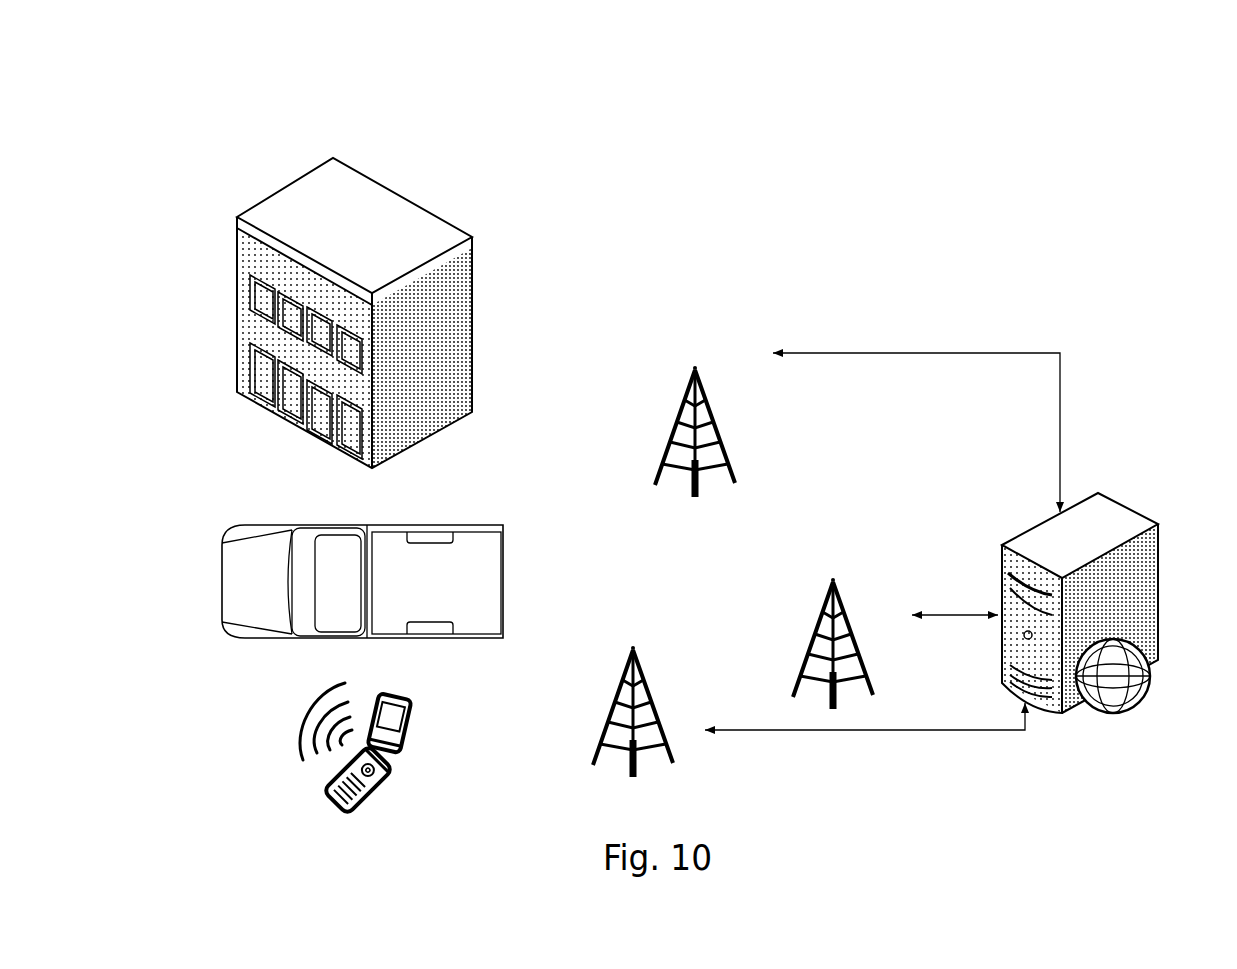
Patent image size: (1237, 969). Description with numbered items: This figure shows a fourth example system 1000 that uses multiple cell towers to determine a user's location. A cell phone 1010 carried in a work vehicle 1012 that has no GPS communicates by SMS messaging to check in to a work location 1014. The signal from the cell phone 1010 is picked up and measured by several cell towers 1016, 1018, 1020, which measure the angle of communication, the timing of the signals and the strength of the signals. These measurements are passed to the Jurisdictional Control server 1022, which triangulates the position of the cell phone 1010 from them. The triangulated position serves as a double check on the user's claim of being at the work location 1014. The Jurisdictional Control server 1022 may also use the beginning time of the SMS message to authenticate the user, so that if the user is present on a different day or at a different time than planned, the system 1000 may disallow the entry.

The communication system 1000 is at (593, 127).
The cell phone 1010 is at (295, 748).
The work vehicle 1012 is at (222, 582).
The work location 1014 is at (355, 160).
The cell tower 1016 is at (833, 515).
The cell tower 1018 is at (690, 300).
The cell tower 1020 is at (642, 617).
The Jurisdictional Control server 1022 is at (1130, 508).